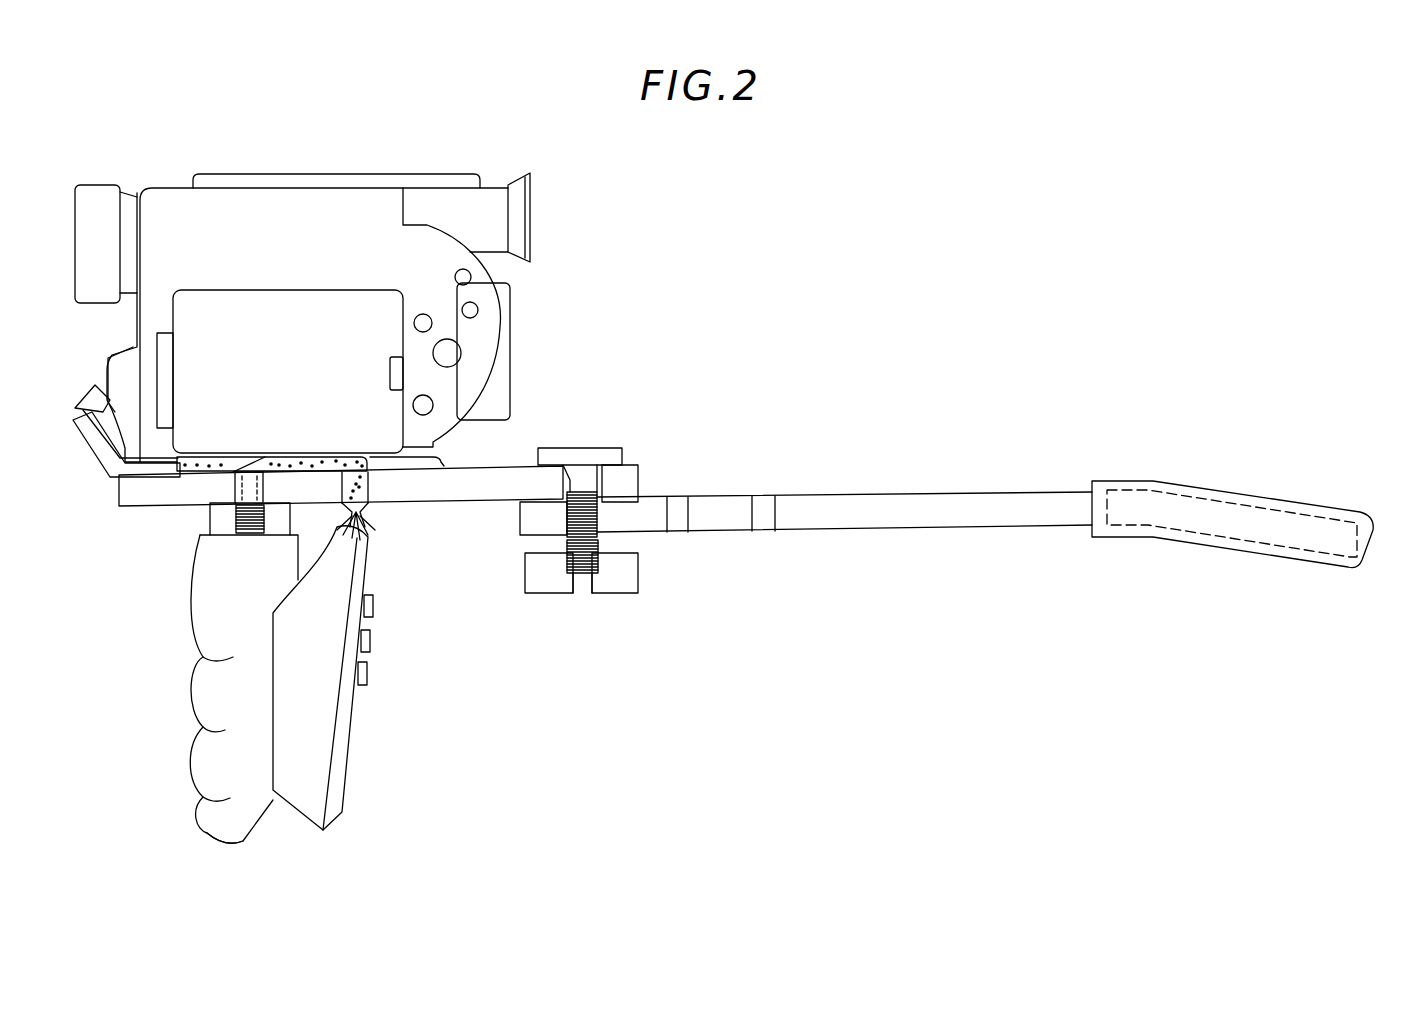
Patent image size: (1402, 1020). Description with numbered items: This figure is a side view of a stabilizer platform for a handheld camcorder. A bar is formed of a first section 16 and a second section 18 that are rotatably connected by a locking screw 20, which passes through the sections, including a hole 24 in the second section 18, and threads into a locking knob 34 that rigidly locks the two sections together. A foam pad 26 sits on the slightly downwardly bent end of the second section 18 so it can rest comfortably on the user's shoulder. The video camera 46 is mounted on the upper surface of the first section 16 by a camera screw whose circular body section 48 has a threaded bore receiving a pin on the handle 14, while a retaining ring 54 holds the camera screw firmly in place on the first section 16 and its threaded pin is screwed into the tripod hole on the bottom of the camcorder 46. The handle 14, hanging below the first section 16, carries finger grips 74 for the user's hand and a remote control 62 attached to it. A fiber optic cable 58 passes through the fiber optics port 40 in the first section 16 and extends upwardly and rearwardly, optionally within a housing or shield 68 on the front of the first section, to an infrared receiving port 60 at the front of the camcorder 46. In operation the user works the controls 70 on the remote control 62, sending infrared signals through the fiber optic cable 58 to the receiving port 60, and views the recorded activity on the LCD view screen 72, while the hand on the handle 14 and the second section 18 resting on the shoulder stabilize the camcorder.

The handle 14 is at (237, 820).
The first section 16 is at (503, 477).
The second section 18 is at (880, 508).
The locking screw 20 is at (603, 445).
The hole 24 is at (680, 495).
The foam pad 26 is at (1237, 550).
The locking knob 34 is at (617, 593).
The fiber optics port 40 is at (368, 512).
The video camera 46 is at (310, 207).
The circular body section 48 is at (210, 520).
The retaining ring 54 is at (237, 478).
The fiber optic cable 58 is at (365, 547).
The infrared receiving port 60 is at (112, 365).
The remote control 62 is at (307, 750).
The housing or shield 68 is at (88, 460).
The controls 70 is at (365, 673).
The LCD view screen 72 is at (373, 317).
The finger grips 74 is at (193, 678).